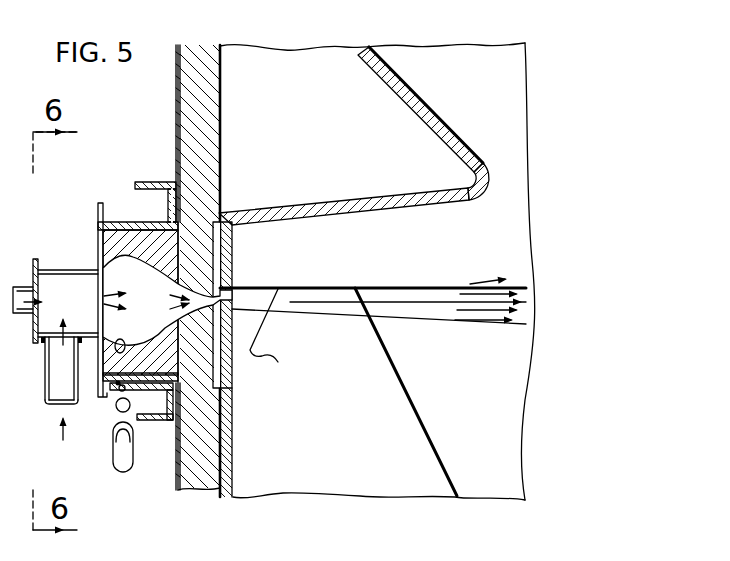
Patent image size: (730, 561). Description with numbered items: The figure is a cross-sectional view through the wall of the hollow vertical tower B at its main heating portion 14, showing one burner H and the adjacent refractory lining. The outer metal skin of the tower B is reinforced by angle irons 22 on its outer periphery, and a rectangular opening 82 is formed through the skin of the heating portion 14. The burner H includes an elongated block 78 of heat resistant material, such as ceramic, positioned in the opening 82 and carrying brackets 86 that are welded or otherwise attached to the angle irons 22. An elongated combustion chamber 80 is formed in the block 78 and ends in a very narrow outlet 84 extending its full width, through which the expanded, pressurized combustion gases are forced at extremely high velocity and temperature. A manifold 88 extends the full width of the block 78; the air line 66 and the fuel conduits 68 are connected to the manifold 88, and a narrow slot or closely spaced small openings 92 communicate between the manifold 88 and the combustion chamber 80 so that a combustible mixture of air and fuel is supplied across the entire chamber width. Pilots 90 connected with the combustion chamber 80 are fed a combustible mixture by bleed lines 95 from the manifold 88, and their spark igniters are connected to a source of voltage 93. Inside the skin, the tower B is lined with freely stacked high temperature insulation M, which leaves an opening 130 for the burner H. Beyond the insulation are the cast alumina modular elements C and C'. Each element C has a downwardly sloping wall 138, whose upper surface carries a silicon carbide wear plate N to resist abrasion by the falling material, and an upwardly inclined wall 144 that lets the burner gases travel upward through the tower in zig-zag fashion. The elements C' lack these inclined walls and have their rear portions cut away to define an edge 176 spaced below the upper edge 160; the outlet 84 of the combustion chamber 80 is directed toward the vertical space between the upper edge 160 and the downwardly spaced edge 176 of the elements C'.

The high temperature insulation M is at (224, 67).
The tower B is at (174, 106).
The main heating portion 14 is at (173, 136).
The angle irons 22 is at (146, 182).
The rectangular opening 82 is at (178, 222).
The brackets 86 is at (100, 202).
The burner H is at (93, 244).
The manifold 88 is at (34, 272).
The narrow slot or openings 92 is at (97, 293).
The combustion chamber 80 is at (133, 258).
The block 78 is at (222, 257).
The opening in insulation 130 is at (232, 232).
The combustion chamber outlet 84 is at (240, 291).
The upper edge 160 is at (355, 288).
The edge 176 is at (379, 331).
The fuel conduits 68 is at (20, 318).
The air line 66 is at (55, 395).
The bleed lines 95 is at (239, 403).
The pilots 90 is at (131, 418).
The source of voltage 93 is at (125, 473).
The downwardly sloping wall 138 is at (422, 134).
The upwardly inclined wall 144 is at (443, 181).
The wear plates N is at (438, 106).
The modular elements C is at (359, 215).
The modular elements C' is at (413, 392).